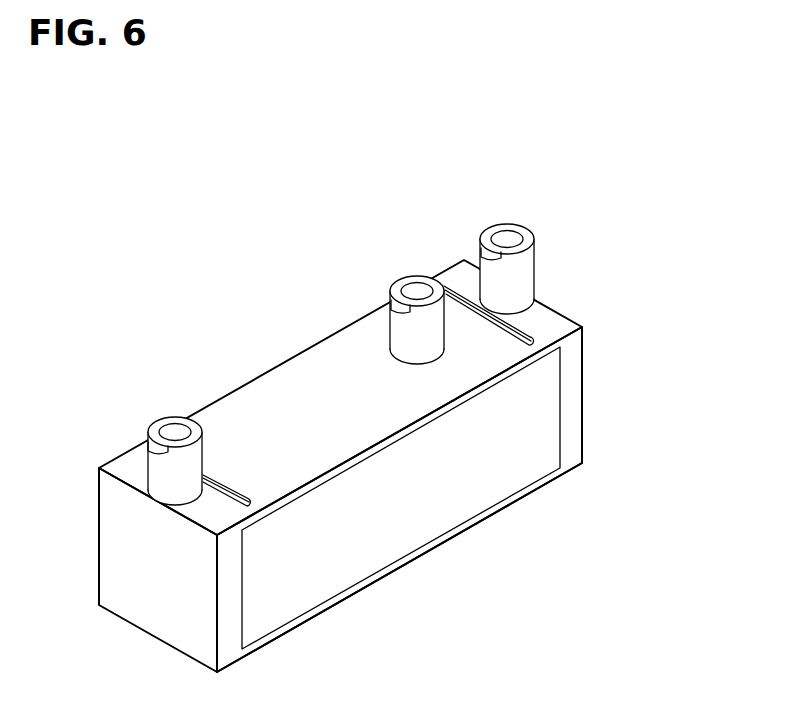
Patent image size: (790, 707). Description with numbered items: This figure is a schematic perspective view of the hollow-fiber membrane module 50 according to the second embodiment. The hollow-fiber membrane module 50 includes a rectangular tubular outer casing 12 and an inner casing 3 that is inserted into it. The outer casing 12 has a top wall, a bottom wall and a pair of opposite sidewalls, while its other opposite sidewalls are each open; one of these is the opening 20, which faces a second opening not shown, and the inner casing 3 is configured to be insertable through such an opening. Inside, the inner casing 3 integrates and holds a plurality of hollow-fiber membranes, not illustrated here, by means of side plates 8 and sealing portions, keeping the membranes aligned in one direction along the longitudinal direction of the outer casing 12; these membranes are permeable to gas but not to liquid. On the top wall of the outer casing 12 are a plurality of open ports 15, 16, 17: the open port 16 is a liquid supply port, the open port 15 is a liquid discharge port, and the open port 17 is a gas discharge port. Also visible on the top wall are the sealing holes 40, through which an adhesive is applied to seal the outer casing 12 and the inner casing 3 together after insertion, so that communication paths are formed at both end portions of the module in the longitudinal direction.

The hollow-fiber membrane module 50 is at (385, 390).
The inner casing 3 is at (369, 438).
The outer casing 12 is at (542, 262).
The side plate 8 is at (510, 472).
The opening 20 is at (350, 585).
The open port 15 is at (158, 472).
The open port 16 is at (402, 325).
The open port 17 is at (482, 272).
The sealing hole 40 is at (208, 476).